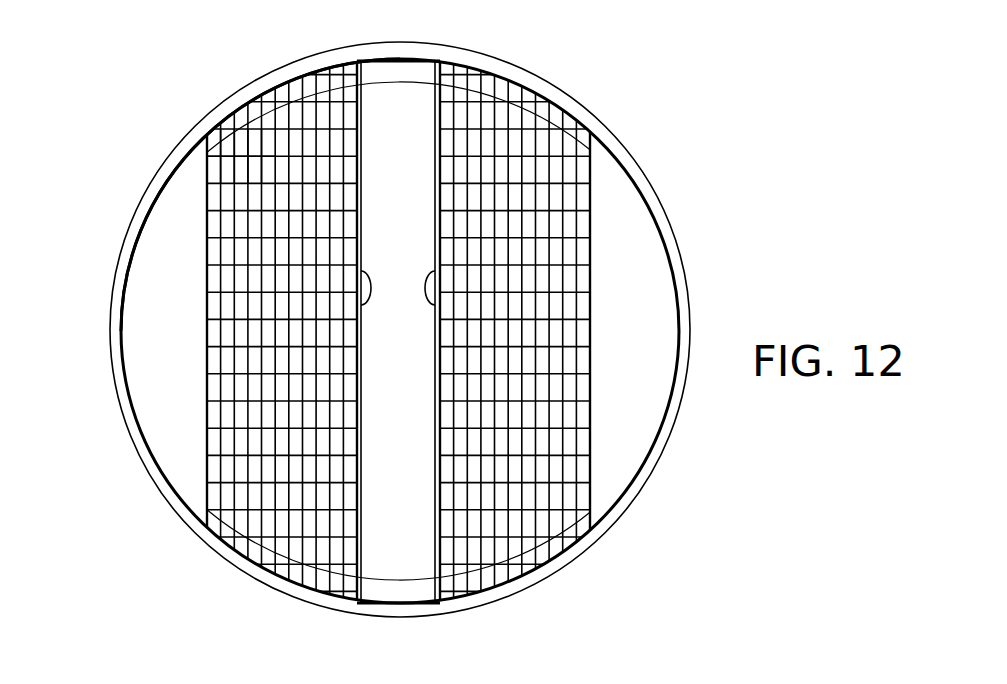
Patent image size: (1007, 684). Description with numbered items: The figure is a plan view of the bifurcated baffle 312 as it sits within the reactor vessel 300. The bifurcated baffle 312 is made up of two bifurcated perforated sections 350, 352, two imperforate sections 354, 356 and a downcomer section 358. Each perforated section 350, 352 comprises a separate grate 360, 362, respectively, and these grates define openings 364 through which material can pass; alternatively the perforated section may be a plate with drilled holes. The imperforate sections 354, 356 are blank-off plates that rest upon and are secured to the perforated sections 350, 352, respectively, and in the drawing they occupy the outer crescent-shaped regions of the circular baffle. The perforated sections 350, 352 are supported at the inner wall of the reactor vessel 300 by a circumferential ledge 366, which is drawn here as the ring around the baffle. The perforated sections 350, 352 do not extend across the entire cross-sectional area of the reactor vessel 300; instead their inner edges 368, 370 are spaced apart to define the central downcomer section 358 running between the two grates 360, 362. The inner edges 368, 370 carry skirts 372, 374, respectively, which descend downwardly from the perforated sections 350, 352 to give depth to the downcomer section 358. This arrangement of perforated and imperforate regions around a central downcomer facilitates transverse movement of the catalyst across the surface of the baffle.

The reactor vessel 300 is at (665, 207).
The bifurcated baffle 312 is at (748, 478).
The perforated section 350 is at (527, 508).
The perforated section 352 is at (268, 510).
The imperforate section 354 is at (633, 262).
The imperforate section 356 is at (165, 242).
The downcomer section 358 is at (397, 128).
The grate 360 is at (470, 537).
The grate 362 is at (323, 535).
The openings 364 is at (254, 168).
The circumferential ledge 366 is at (384, 60).
The inner edge 368 is at (438, 270).
The inner edge 370 is at (357, 272).
The skirt 372 is at (435, 498).
The skirt 374 is at (361, 498).